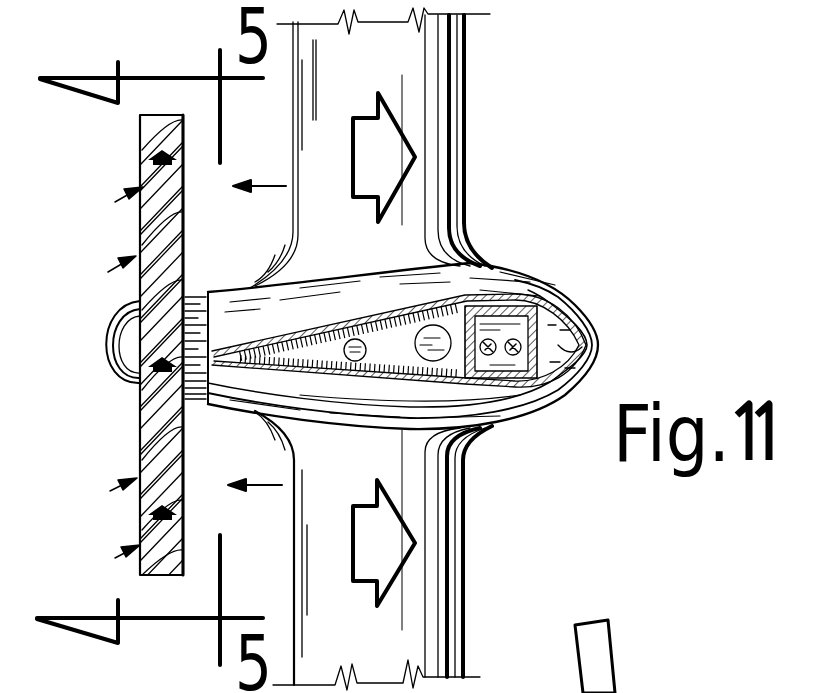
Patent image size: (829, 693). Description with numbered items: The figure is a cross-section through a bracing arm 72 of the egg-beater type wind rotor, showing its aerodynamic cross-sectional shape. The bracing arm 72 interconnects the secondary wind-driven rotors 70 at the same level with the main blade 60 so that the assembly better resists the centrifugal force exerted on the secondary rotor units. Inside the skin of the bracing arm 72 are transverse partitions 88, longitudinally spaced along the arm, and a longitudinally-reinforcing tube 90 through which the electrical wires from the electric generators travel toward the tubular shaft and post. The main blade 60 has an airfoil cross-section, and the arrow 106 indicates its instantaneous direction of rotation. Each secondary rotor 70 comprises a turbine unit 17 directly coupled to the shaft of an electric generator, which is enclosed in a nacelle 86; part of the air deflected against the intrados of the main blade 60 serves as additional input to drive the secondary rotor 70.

The turbine unit 17 is at (140, 301).
The secondary wind-driven rotor 70 is at (122, 227).
The arrow 106 is at (390, 150).
The main blade 60 is at (415, 185).
The nacelle 86 is at (462, 265).
The transverse partitions 88 is at (597, 356).
The bracing arm 72 is at (520, 293).
The longitudinally-reinforcing tube 90 is at (555, 324).